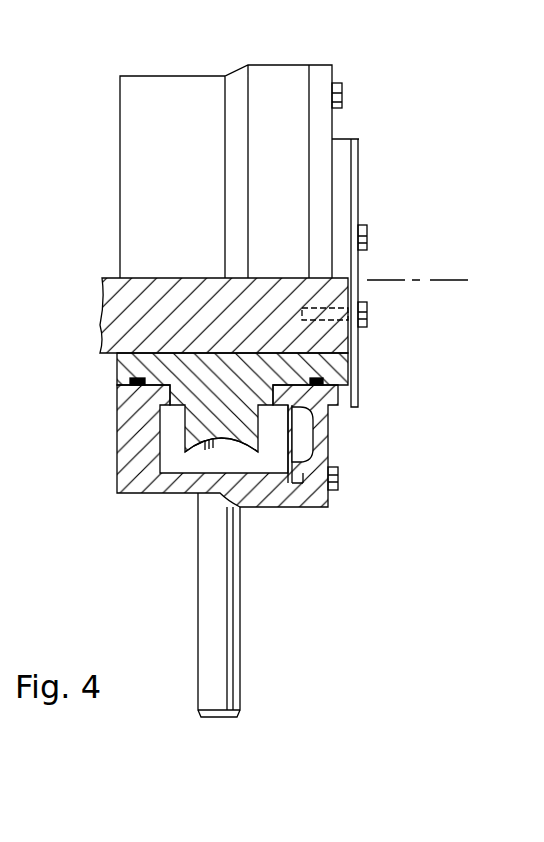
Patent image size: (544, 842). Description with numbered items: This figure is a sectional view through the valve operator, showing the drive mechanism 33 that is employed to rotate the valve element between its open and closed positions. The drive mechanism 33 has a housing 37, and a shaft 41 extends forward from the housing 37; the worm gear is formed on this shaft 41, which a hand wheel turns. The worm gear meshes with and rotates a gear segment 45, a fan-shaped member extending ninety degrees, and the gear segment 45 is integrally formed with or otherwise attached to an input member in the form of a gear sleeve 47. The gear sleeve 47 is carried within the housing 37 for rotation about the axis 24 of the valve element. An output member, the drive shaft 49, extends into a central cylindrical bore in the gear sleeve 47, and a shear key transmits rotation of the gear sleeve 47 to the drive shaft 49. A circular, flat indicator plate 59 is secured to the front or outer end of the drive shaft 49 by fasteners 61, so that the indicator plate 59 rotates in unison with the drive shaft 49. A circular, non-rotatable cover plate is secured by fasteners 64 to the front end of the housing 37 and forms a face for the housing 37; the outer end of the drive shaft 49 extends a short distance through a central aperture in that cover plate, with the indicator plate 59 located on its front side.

The housing 37 is at (140, 140).
The drive mechanism 33 is at (416, 161).
The fasteners 64 is at (342, 93).
The indicator plate 59 is at (362, 267).
The axis 24 is at (440, 282).
The fasteners 61 is at (367, 312).
The drive shaft 49 is at (135, 313).
The gear sleeve 47 is at (173, 367).
The gear segment 45 is at (238, 453).
The shaft 41 is at (242, 615).